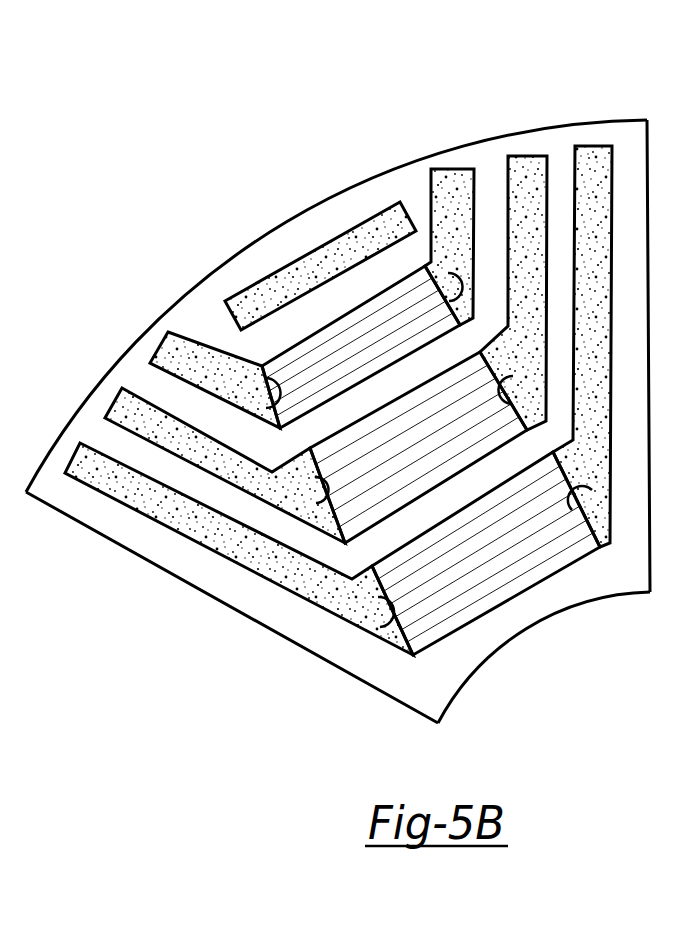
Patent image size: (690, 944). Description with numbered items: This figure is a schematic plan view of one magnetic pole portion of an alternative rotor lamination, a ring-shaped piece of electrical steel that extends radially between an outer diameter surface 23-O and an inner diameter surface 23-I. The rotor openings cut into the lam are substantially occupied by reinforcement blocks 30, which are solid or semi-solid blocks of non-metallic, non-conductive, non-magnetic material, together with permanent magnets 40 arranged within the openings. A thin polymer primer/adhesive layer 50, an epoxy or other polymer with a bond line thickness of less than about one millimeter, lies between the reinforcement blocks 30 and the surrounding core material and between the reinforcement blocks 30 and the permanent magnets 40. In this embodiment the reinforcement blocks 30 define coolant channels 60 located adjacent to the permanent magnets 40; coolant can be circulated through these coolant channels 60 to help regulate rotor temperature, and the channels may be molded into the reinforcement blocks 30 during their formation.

The outer diameter surface 23-O is at (283, 218).
The inner diameter surface 23-I is at (530, 627).
The reinforcement block 30 is at (308, 353).
The permanent magnet 40 is at (431, 460).
The polymer primer/adhesive layer 50 is at (212, 436).
The coolant channel 60 is at (345, 392).